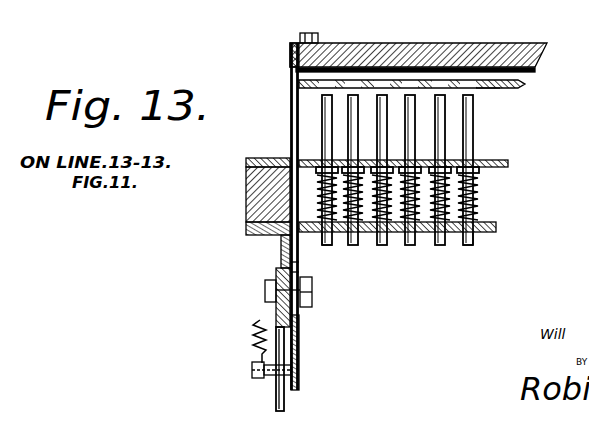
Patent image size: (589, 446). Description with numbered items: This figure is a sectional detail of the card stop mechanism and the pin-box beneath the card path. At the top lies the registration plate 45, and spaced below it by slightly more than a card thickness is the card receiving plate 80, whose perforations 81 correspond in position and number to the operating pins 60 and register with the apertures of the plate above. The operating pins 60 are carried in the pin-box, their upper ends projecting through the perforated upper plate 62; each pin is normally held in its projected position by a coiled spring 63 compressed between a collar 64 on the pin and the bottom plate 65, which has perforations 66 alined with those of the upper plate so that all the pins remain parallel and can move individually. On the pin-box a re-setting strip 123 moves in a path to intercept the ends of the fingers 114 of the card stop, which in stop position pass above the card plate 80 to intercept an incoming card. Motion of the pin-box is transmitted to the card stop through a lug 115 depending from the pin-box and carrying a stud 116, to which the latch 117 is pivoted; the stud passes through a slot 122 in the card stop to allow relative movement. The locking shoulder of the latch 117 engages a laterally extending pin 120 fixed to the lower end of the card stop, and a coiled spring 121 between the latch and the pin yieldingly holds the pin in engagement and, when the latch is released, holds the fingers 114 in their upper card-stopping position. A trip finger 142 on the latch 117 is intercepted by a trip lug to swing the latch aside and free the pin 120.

The registration plate 45 is at (506, 52).
The re-setting strip 123 is at (289, 52).
The fingers 114 is at (290, 128).
The card receiving plate 80 is at (525, 85).
The perforations 81 is at (497, 90).
The operating pins 60 is at (473, 133).
The upper plate 62 is at (503, 156).
The collars 64 is at (480, 171).
The coiled springs 63 is at (480, 184).
The bottom plate 65 is at (490, 228).
The perforations 66 is at (474, 234).
The lug 115 is at (280, 250).
The slot 122 is at (299, 268).
The latch 117 is at (276, 316).
The stud 116 is at (306, 285).
The trip finger 142 is at (276, 396).
The coiled spring 121 is at (255, 330).
The pin 120 is at (252, 370).